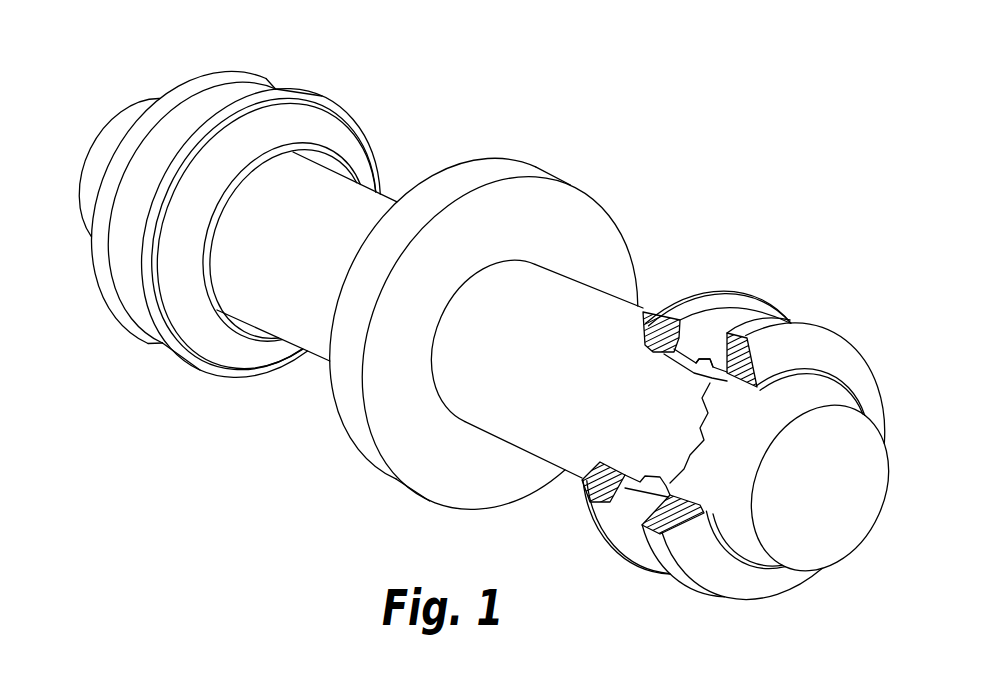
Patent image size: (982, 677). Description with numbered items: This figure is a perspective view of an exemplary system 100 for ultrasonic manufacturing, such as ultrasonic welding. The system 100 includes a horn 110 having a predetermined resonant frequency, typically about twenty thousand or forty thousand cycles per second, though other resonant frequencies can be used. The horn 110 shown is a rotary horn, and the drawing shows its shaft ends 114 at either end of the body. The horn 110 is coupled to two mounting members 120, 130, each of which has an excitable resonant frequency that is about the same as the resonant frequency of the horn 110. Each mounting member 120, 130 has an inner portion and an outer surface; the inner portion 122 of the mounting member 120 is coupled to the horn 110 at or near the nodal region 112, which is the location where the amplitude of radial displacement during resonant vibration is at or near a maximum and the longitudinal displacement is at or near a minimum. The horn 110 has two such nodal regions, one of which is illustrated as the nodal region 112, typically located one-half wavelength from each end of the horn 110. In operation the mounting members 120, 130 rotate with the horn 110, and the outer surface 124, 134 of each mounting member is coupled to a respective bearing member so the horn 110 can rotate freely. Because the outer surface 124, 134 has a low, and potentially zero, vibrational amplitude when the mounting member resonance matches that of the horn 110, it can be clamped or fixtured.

The system 100 is at (583, 52).
The horn 110 is at (512, 177).
The nodal region 112 is at (487, 317).
The shaft ends 114 is at (110, 131).
The mounting member 120 is at (848, 350).
The inner portion 122 is at (702, 381).
The outer surface 124 is at (792, 318).
The mounting member 130 is at (272, 86).
The outer surface 134 is at (205, 78).